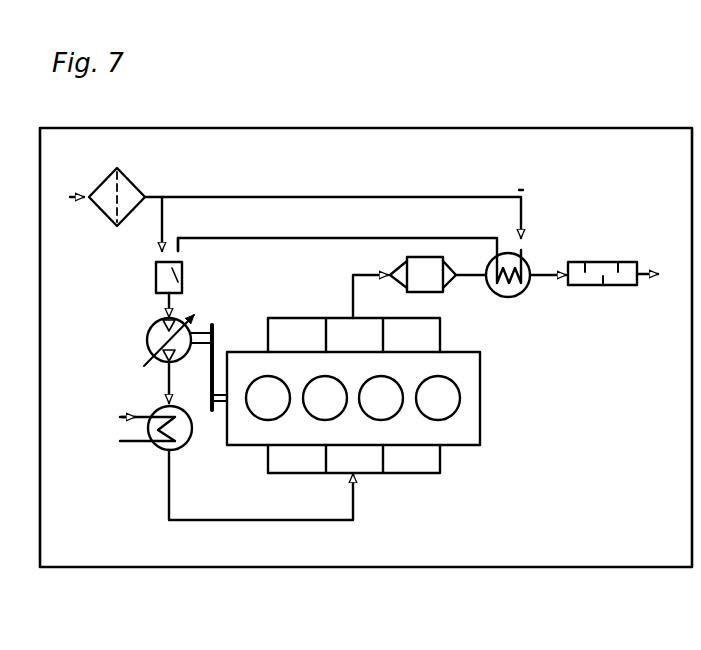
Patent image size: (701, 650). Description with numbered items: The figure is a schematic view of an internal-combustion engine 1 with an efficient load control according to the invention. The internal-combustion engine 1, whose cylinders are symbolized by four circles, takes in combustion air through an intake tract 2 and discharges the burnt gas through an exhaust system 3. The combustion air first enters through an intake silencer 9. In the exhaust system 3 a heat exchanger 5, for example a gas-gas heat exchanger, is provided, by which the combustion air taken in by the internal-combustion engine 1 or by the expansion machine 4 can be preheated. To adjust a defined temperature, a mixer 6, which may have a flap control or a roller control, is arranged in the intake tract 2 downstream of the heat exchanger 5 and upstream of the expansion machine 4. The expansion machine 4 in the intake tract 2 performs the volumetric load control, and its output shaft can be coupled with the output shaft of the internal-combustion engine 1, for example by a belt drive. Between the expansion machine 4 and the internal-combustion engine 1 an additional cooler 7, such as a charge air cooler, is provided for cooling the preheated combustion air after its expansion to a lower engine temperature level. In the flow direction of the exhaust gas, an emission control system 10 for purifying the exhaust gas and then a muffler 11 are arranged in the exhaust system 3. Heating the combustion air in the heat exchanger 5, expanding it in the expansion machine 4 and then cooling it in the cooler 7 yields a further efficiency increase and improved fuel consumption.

The internal-combustion engine 1 is at (485, 415).
The intake tract 2 is at (90, 480).
The exhaust system 3 is at (562, 187).
The expansion machine 4 is at (148, 326).
The heat exchanger 5 is at (508, 299).
The mixer 6 is at (190, 283).
The cooler 7 is at (185, 443).
The intake silencer 9 is at (135, 181).
The emission control system 10 is at (430, 294).
The muffler 11 is at (617, 287).